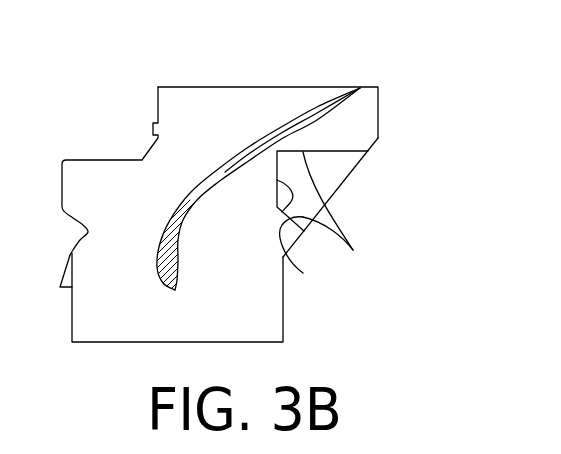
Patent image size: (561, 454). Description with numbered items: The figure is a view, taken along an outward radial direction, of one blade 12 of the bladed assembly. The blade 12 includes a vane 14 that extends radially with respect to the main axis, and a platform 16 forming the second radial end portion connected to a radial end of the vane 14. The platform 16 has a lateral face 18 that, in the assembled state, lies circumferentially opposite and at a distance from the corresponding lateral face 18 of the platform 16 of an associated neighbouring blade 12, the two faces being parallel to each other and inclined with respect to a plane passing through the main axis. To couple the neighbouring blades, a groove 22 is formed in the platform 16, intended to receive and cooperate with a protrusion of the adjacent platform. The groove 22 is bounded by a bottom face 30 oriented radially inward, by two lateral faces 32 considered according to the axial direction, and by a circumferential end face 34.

The blade 12 is at (280, 73).
The vane 14 is at (220, 138).
The platform 16 is at (318, 319).
The lateral face 18 is at (358, 163).
The groove 22 is at (356, 192).
The bottom face 30 is at (332, 167).
The lateral faces 32 is at (347, 215).
The circumferential end face 34 is at (309, 258).